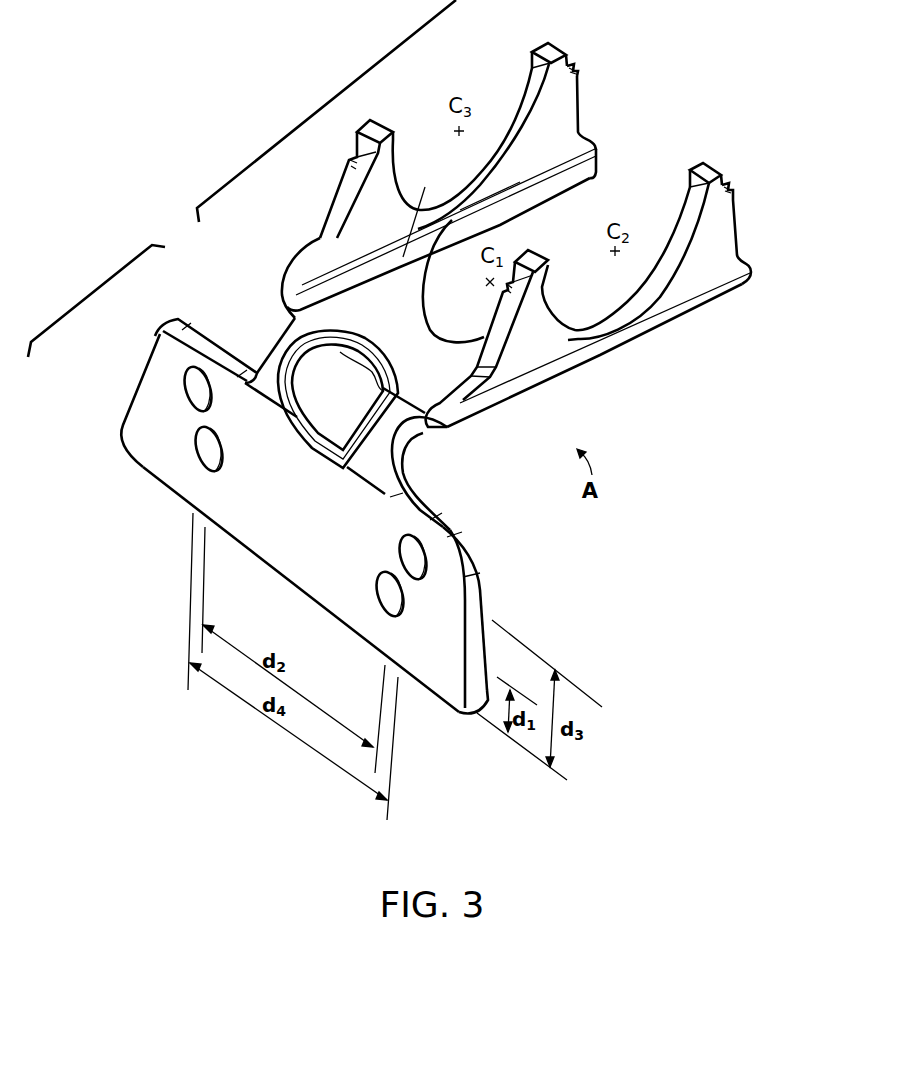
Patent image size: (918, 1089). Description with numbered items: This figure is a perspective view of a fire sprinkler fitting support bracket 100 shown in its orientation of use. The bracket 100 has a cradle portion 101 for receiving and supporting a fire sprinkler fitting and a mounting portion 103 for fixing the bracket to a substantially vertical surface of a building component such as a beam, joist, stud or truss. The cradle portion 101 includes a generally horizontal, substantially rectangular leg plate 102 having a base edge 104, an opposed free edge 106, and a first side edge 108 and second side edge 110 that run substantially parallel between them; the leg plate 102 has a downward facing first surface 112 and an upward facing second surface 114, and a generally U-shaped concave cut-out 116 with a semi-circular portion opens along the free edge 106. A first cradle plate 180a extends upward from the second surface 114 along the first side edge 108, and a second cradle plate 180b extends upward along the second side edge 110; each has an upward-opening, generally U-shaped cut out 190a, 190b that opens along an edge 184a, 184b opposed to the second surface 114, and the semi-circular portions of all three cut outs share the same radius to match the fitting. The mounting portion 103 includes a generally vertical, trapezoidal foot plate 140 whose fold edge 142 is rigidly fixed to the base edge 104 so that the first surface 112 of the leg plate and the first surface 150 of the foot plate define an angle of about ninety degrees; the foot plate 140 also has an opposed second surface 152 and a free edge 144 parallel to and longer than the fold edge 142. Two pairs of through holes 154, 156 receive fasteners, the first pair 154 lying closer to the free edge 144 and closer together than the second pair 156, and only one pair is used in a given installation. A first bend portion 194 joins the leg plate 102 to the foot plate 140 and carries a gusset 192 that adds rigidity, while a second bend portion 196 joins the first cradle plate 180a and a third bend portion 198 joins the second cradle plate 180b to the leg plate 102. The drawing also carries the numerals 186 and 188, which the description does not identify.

The fire sprinkler fitting support bracket 100 is at (771, 98).
The cradle portion 101 is at (332, 98).
The leg plate 102 is at (446, 280).
The mounting portion 103 is at (108, 273).
The base edge 104 is at (408, 437).
The free edge 106 is at (750, 275).
The first side edge 108 is at (700, 313).
The second side edge 110 is at (282, 276).
The first surface 112 is at (553, 202).
The second surface 114 is at (432, 322).
The concave cut-out 116 is at (570, 177).
The foot plate 140 is at (225, 414).
The fold edge 142 is at (438, 518).
The free edge 144 is at (238, 543).
The first surface 150 is at (490, 595).
The second surface 152 is at (442, 690).
The first pair of through holes 154 is at (200, 447).
The second pair of through holes 156 is at (198, 400).
The first cradle plate 180a is at (723, 246).
The second cradle plate 180b is at (565, 110).
The edge of first cradle plate 184a is at (706, 168).
The edge of second cradle plate 184b is at (548, 45).
The notch 186 is at (578, 68).
The retaining arm 188 is at (352, 148).
The cut out of first cradle plate 190a is at (638, 300).
The cut out of second cradle plate 190b is at (527, 112).
The gusset 192 is at (338, 412).
The first bend portion 194 is at (280, 350).
The second bend portion 196 is at (428, 427).
The third bend portion 198 is at (425, 210).